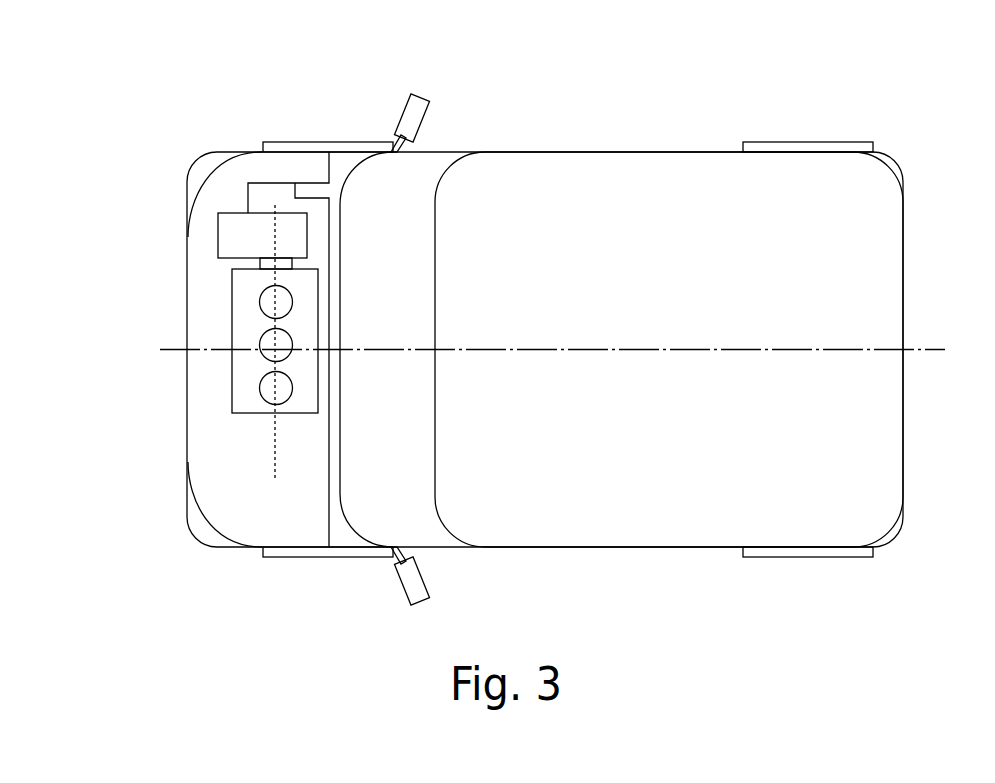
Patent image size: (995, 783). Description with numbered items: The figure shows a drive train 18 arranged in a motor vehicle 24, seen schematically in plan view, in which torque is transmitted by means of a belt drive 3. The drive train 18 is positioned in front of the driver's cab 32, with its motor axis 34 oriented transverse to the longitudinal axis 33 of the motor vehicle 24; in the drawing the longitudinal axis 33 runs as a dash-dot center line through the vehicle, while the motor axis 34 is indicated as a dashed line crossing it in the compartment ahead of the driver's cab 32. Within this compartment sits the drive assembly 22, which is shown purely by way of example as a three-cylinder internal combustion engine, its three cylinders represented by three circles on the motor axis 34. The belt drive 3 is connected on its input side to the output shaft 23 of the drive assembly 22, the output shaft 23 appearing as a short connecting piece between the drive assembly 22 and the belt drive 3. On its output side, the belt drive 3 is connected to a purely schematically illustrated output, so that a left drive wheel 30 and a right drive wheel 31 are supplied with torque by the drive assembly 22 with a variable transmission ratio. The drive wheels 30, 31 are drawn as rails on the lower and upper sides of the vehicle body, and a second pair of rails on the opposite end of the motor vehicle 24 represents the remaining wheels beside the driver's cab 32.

The belt drive 3 is at (218, 232).
The drive train 18 is at (118, 214).
The drive assembly 22 is at (232, 340).
The output shaft 23 is at (233, 266).
The motor vehicle 24 is at (786, 104).
The left drive wheel 30 is at (302, 558).
The right drive wheel 31 is at (274, 142).
The driver's cab 32 is at (542, 185).
The longitudinal axis 33 is at (665, 350).
The motor axis 34 is at (275, 478).